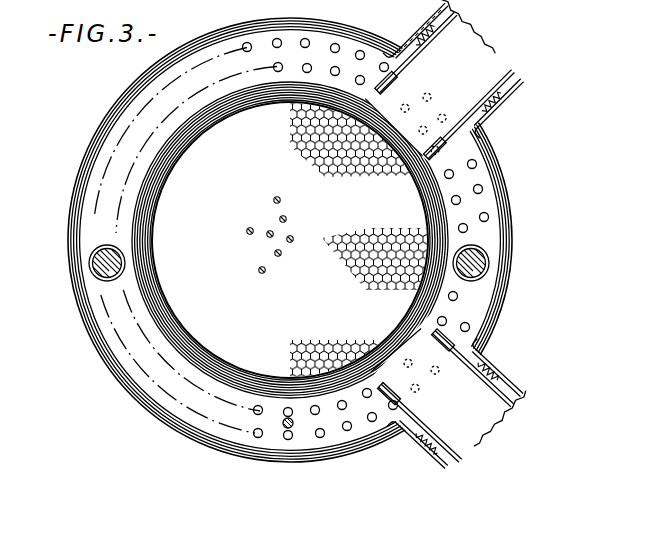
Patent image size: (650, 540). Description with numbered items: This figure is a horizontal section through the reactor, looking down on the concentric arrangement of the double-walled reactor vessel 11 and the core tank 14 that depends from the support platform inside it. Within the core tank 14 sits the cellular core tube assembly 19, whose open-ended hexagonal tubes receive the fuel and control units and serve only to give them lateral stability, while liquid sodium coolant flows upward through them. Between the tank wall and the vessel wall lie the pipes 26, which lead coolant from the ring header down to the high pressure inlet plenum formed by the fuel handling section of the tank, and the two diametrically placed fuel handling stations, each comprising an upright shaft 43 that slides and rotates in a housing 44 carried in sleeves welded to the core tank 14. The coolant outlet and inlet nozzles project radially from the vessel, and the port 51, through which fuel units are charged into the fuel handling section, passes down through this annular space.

The double-walled reactor vessel 11 is at (505, 259).
The core tank 14 is at (447, 243).
The cellular core tube assembly 19 is at (326, 346).
The pipes 26 is at (482, 188).
The upright shaft 43 is at (487, 272).
The housing 44 is at (503, 302).
The port 51 is at (291, 427).